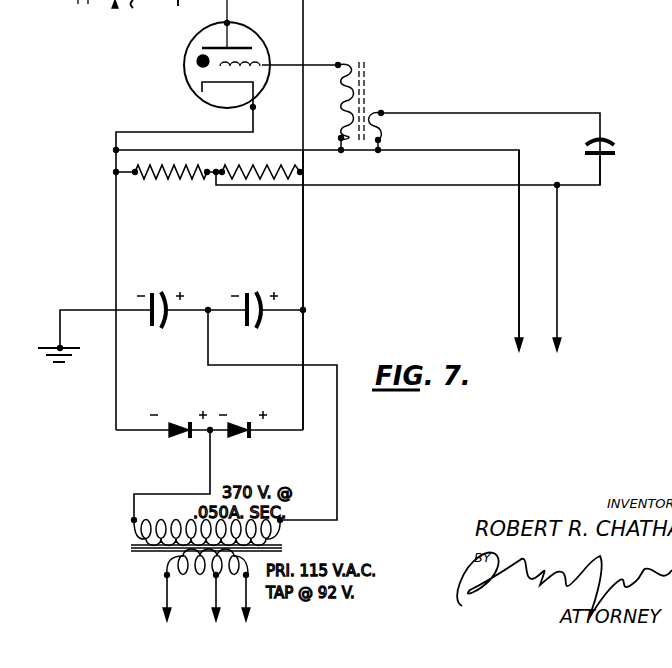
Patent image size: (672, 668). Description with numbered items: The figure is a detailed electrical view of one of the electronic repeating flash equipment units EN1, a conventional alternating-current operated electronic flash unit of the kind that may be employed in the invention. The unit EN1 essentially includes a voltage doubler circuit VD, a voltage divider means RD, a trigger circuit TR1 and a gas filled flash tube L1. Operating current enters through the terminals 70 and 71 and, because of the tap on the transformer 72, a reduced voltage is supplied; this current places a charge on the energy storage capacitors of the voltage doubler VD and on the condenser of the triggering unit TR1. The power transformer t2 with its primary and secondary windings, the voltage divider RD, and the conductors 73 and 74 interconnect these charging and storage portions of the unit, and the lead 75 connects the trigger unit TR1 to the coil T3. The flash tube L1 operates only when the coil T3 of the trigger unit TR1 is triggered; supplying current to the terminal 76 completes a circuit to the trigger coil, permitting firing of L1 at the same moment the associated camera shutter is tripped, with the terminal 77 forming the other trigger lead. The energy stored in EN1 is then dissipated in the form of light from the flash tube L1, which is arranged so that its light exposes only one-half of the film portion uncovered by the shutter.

The flash tube L1 is at (187, 66).
The trigger coil T3 is at (370, 80).
The lead wire 75 is at (472, 113).
The trigger circuit TR1 is at (560, 134).
The electronic repeating flash equipment unit EN1 is at (99, 172).
The conductor 73 is at (116, 197).
The conductor 74 is at (303, 203).
The voltage divider means RD is at (197, 190).
The terminal 76 is at (519, 294).
The output lead 77 is at (557, 282).
The voltage doubler circuit VD is at (133, 380).
The power transformer t2 is at (190, 543).
The terminal 70 is at (167, 598).
The terminal 71 is at (216, 598).
The transformer 72 is at (246, 606).